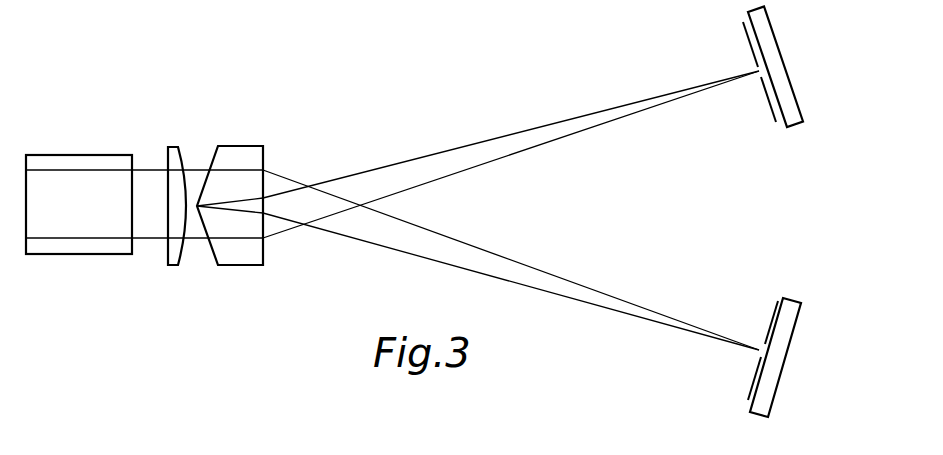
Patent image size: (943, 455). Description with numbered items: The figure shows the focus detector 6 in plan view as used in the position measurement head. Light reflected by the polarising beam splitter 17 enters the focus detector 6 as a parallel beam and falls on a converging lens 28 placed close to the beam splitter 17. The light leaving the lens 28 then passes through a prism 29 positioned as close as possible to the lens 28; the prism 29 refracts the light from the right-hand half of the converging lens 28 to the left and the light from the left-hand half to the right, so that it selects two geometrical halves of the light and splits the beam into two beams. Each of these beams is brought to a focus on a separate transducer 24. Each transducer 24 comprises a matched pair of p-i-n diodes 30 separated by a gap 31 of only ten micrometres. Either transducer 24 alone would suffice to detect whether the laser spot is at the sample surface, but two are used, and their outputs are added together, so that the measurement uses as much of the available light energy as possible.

The polarising beam splitter 17 is at (97, 156).
The converging lens 28 is at (181, 147).
The prism 29 is at (237, 146).
The focus detector 6 is at (392, 137).
The transducer 24 is at (791, 63).
The p-i-n diodes 30 is at (749, 43).
The gap 31 is at (758, 78).